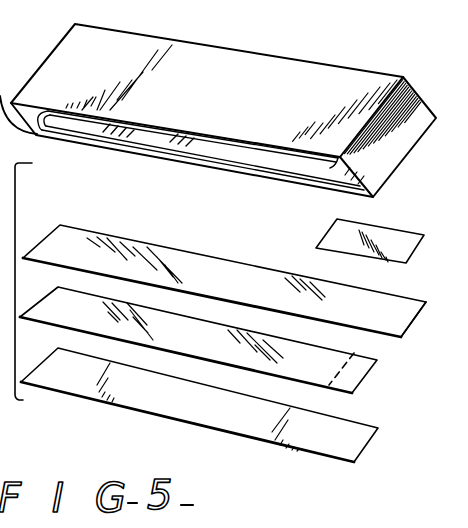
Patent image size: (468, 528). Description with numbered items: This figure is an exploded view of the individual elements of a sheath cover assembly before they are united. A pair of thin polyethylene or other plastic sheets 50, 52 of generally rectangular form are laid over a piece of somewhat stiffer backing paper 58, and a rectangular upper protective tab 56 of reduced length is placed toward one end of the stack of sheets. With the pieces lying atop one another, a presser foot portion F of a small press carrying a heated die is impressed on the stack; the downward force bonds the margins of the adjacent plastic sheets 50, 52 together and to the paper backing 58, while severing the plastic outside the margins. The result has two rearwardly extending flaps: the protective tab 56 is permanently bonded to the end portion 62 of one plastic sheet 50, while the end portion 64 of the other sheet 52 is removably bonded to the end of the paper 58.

The presser foot portion F is at (242, 68).
The plastic sheet 50 is at (73, 233).
The plastic sheet 52 is at (53, 298).
The upper protective tab 56 is at (339, 235).
The backing paper 58 is at (344, 454).
The end portion of plastic sheet 62 is at (392, 306).
The end portion of sheet 64 is at (362, 368).